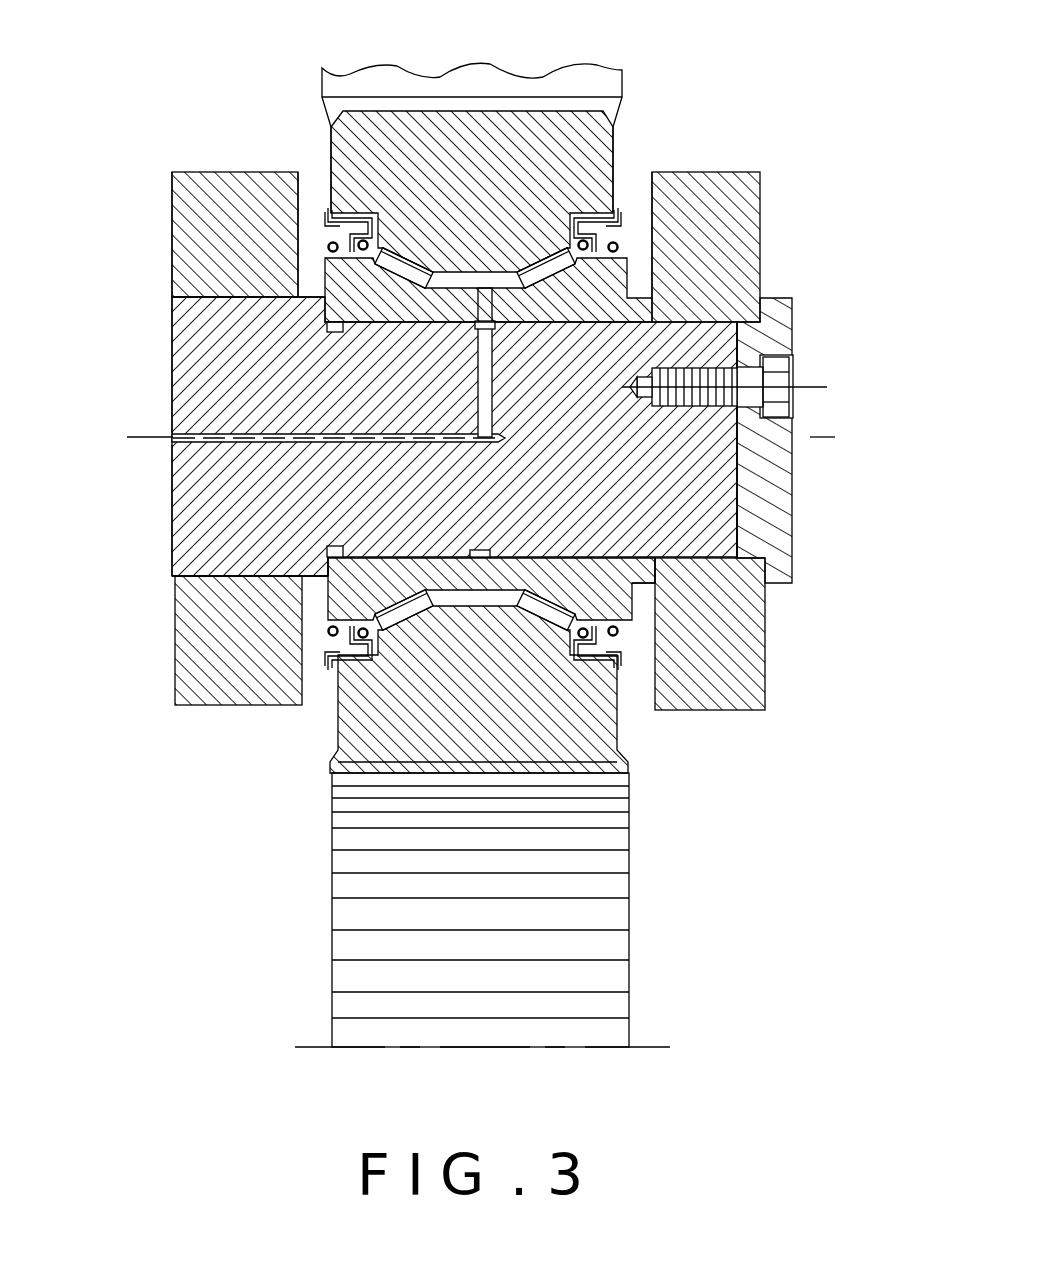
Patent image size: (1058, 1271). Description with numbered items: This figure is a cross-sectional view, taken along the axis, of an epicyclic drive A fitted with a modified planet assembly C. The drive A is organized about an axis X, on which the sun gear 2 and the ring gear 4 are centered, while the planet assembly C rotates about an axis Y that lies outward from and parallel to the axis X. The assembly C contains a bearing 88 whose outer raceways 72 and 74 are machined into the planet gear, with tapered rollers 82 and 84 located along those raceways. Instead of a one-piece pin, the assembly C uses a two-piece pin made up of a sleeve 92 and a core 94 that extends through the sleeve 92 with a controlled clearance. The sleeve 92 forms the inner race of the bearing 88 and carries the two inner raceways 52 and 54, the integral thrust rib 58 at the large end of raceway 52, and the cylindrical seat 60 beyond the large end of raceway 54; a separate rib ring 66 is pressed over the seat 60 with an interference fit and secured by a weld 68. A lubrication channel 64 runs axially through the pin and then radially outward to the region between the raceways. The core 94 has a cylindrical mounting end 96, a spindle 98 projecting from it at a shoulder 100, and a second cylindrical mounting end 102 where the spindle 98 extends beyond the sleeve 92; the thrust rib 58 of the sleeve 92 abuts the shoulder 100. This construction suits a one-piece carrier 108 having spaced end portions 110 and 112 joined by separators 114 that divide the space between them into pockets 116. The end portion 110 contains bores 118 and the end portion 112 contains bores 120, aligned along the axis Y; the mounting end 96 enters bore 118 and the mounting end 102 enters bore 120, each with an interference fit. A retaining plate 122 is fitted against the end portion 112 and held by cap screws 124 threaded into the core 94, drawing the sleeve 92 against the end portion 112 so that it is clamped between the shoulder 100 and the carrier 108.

The sun gear 2 is at (318, 933).
The ring gear 4 is at (345, 64).
The raceway 52 is at (417, 633).
The raceway 54 is at (543, 640).
The thrust rib 58 is at (323, 262).
The cylindrical seat 60 is at (630, 268).
The lubrication channel 64 is at (240, 433).
The rib ring 66 is at (677, 630).
The weld 68 is at (667, 607).
The outer raceway 72 is at (420, 266).
The outer raceway 74 is at (548, 256).
The tapered rollers 82 is at (405, 278).
The tapered rollers 84 is at (560, 264).
The bearing 88 is at (455, 642).
The sleeve 92 is at (633, 575).
The core 94 is at (203, 495).
The cylindrical mounting end 96 is at (217, 333).
The spindle 98 is at (663, 490).
The shoulder 100 is at (327, 580).
The cylindrical mounting end 102 is at (710, 468).
The one-piece carrier 108 is at (160, 278).
The end portion 110 is at (203, 208).
The end portion 112 is at (732, 203).
The separators 114 is at (315, 195).
The pockets 116 is at (632, 190).
The bores 118 is at (247, 577).
The bores 120 is at (745, 520).
The retaining plate 122 is at (793, 323).
The cap screws 124 is at (795, 380).
The epicyclic drive A is at (273, 873).
The modified planet assembly C is at (160, 706).
The axis X is at (499, 1049).
The axis Y is at (477, 437).